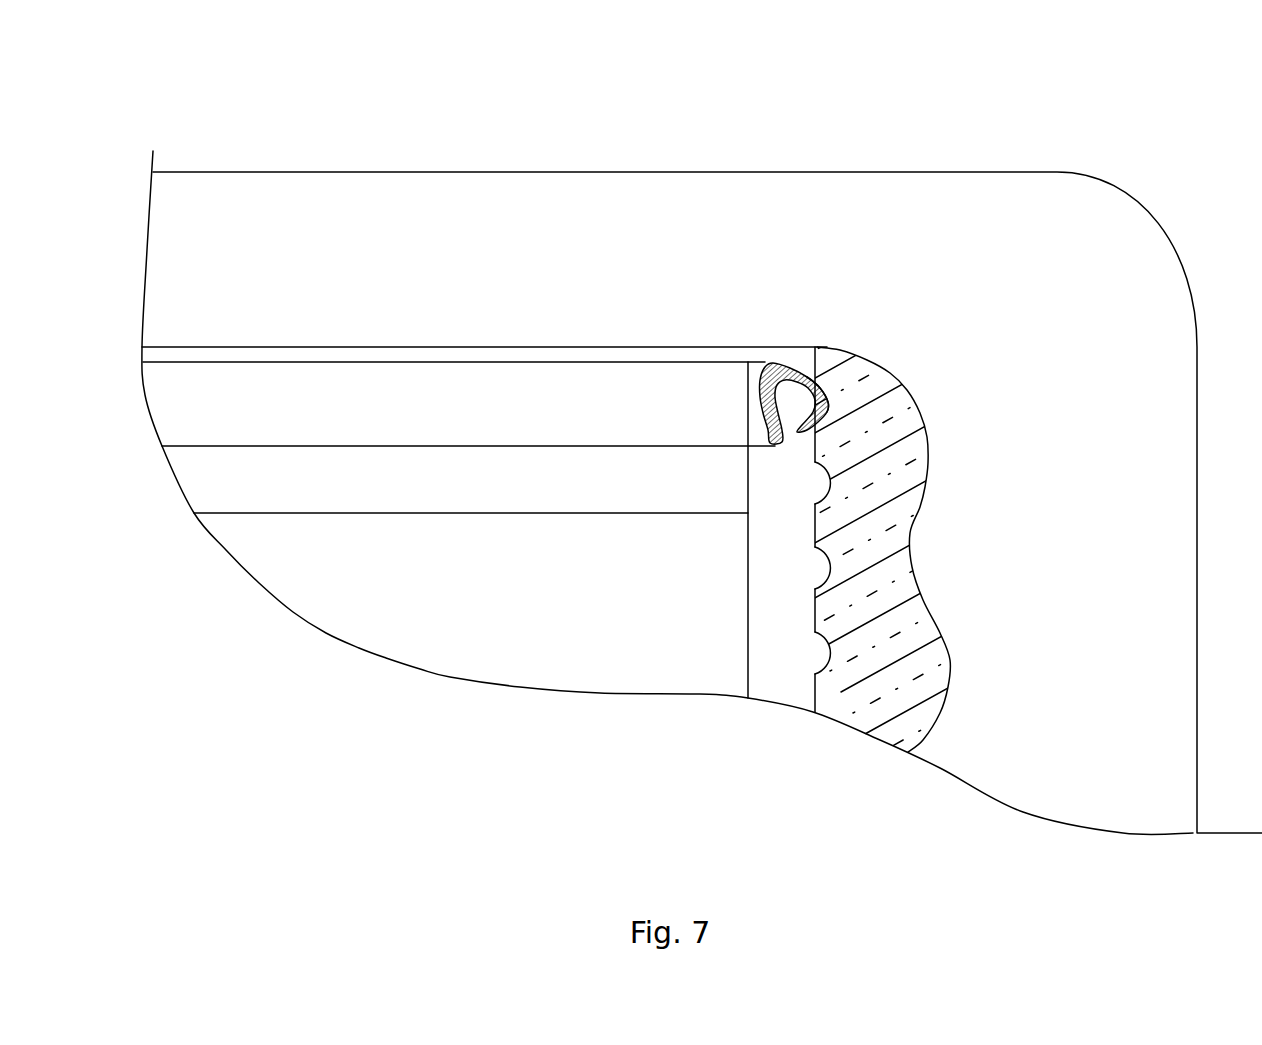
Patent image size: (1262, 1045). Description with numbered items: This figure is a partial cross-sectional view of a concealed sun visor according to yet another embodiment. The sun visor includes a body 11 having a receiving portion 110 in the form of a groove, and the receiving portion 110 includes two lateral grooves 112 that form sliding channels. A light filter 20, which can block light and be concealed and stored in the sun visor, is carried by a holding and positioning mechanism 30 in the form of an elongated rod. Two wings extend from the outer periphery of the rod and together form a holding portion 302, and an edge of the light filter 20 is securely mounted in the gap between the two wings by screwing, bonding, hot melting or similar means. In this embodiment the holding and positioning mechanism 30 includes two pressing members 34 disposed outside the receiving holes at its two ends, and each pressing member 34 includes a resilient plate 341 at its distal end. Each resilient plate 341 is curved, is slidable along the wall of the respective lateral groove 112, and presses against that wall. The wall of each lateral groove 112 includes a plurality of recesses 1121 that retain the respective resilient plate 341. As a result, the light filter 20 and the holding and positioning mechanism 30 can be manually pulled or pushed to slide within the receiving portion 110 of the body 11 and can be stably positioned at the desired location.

The body 11 is at (1103, 267).
The light filter 20 is at (702, 635).
The holding and positioning mechanism 30 is at (452, 397).
The holding portion 302 is at (432, 473).
The receiving portion 110 is at (797, 648).
The lateral grooves 112 is at (815, 532).
The recesses 1121 is at (820, 575).
The pressing members 34 is at (763, 373).
The resilient plate 341 is at (823, 380).